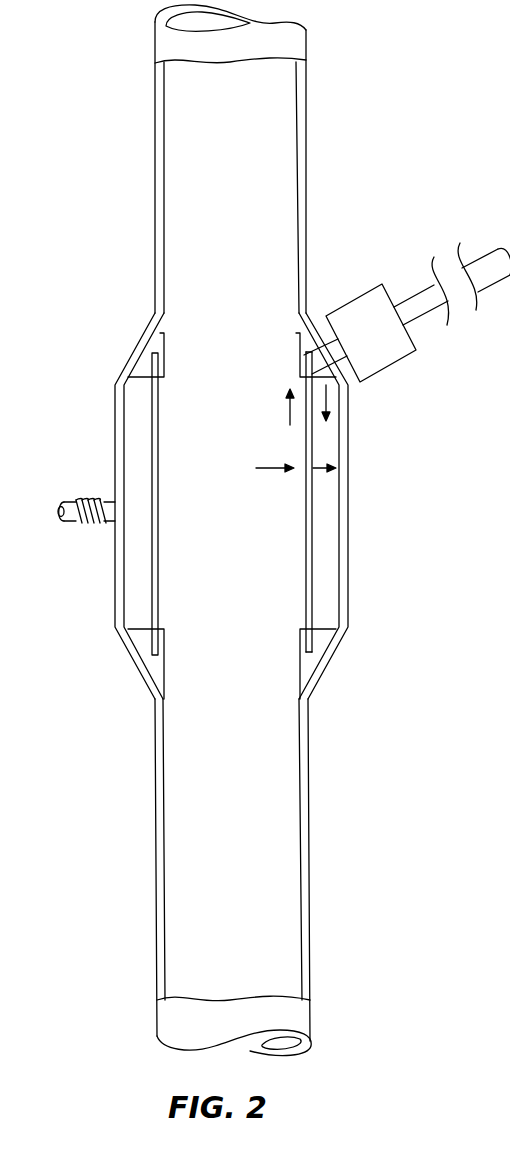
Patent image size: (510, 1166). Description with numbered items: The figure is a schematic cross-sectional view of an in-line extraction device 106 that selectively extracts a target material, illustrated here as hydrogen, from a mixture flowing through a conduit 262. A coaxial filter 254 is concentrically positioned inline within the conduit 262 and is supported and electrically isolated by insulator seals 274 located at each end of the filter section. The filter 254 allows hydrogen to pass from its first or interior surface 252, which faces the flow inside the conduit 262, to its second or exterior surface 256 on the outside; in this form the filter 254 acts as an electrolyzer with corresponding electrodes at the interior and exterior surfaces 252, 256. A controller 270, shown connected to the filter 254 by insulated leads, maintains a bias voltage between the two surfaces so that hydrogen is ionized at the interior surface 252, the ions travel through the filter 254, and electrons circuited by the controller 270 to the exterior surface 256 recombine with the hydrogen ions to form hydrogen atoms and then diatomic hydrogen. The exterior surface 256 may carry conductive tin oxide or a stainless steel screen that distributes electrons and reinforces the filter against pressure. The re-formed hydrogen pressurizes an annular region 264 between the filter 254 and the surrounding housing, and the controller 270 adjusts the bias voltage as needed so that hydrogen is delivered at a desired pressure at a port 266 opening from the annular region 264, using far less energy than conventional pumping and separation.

The in-line extraction device 106 is at (108, 150).
The conduit 262 is at (275, 132).
The annular region 264 is at (137, 584).
The insulator seals 274 is at (150, 340).
The port 266 is at (62, 500).
The interior surface 252 is at (306, 592).
The coaxial filter 254 is at (308, 502).
The exterior surface 256 is at (313, 557).
The controller 270 is at (348, 302).